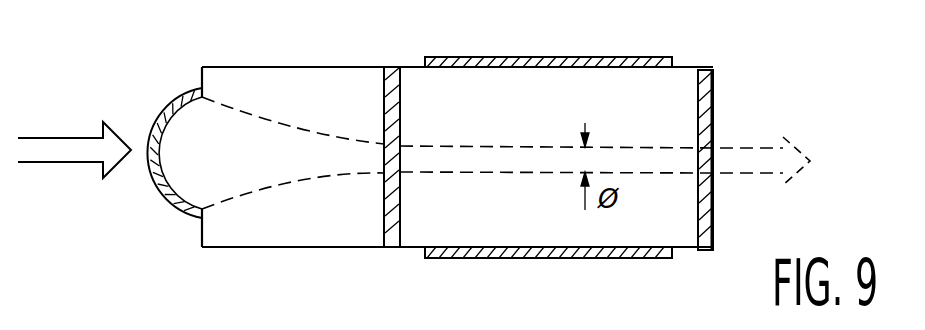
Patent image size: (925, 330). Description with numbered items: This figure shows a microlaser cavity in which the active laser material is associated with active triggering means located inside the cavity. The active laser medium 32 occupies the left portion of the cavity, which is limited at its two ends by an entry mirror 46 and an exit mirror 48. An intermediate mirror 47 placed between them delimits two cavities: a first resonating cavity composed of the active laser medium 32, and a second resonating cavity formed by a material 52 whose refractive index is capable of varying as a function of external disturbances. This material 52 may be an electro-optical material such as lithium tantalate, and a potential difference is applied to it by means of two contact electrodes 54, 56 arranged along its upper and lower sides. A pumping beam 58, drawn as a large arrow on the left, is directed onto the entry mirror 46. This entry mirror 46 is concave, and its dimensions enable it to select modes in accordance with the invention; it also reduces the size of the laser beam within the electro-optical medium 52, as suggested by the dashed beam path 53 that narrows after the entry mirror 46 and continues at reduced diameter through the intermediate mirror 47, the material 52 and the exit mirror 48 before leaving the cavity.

The active laser medium 32 is at (283, 76).
The entry mirror 46 is at (172, 191).
The intermediate mirror 47 is at (392, 67).
The exit mirror 48 is at (700, 251).
The electro-optical material 52 is at (680, 80).
The light beam path 53 is at (283, 184).
The contact electrode 54 is at (538, 63).
The contact electrode 56 is at (467, 261).
The pumping beam 58 is at (45, 145).